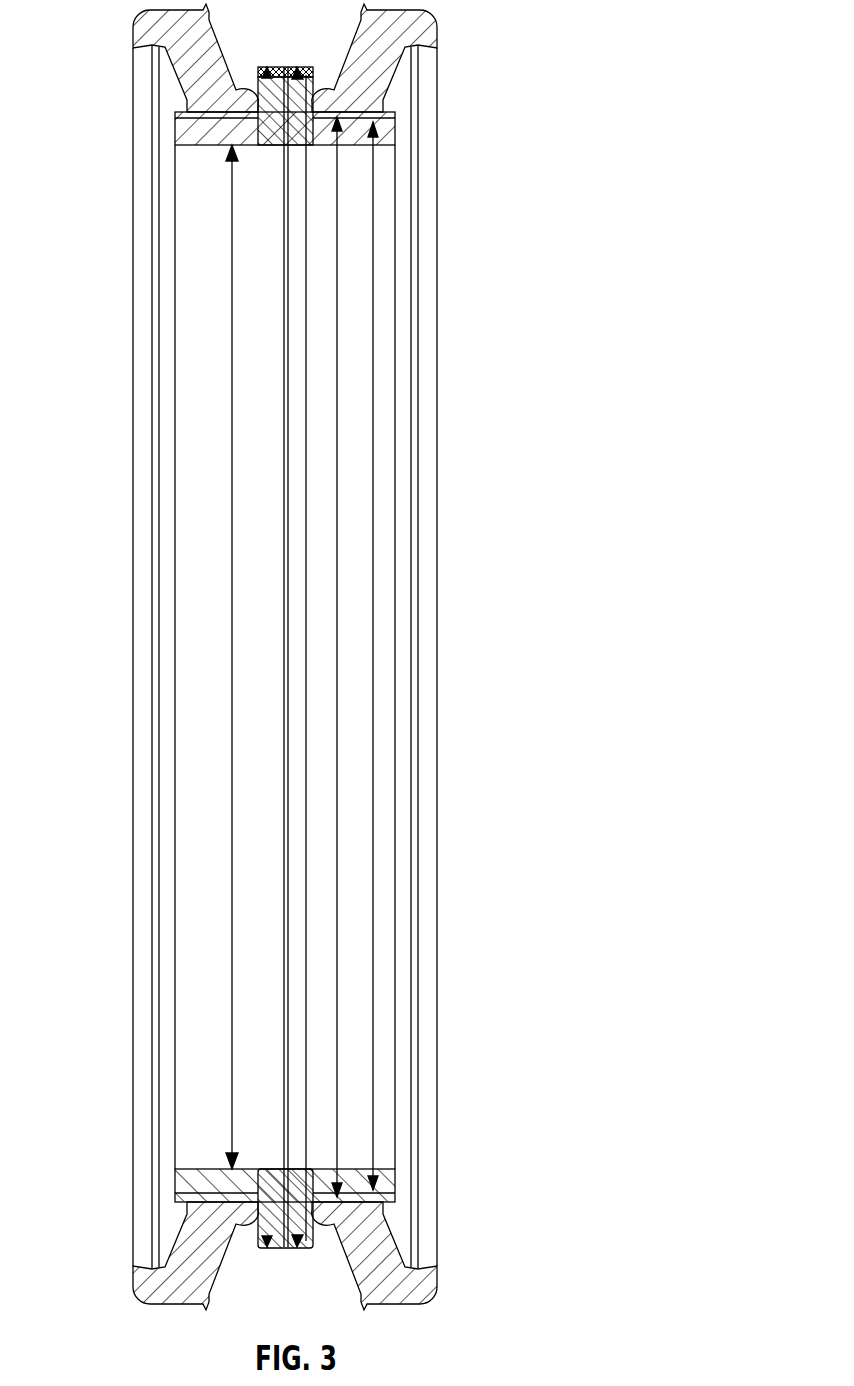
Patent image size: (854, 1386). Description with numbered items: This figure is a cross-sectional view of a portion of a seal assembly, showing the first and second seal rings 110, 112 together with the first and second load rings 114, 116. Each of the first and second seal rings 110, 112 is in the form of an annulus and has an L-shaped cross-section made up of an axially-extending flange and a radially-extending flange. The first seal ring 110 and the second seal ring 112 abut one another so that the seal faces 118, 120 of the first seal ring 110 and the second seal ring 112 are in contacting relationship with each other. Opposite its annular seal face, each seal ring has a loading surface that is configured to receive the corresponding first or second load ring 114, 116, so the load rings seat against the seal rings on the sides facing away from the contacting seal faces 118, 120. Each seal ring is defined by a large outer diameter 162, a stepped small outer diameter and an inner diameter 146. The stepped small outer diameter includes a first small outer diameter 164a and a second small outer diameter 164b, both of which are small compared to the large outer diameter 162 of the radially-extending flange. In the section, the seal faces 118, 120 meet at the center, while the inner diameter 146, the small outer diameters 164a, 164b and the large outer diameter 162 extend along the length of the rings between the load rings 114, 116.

The first seal ring 110 is at (190, 315).
The second seal ring 112 is at (383, 232).
The first load ring 114 is at (153, 230).
The second load ring 116 is at (418, 82).
The seal face 118 is at (312, 66).
The seal face 120 is at (262, 66).
The inner diameter 146 is at (232, 563).
The large outer diameter 162 is at (307, 618).
The first small outer diameter 164a is at (373, 518).
The second small outer diameter 164b is at (337, 393).